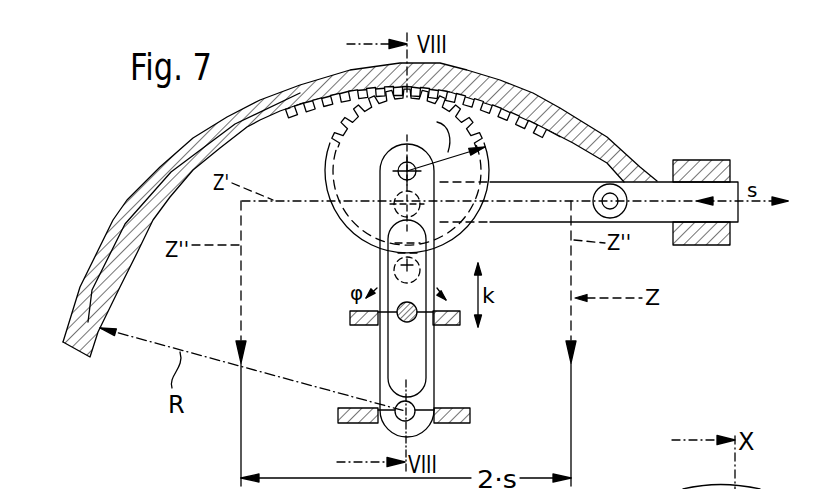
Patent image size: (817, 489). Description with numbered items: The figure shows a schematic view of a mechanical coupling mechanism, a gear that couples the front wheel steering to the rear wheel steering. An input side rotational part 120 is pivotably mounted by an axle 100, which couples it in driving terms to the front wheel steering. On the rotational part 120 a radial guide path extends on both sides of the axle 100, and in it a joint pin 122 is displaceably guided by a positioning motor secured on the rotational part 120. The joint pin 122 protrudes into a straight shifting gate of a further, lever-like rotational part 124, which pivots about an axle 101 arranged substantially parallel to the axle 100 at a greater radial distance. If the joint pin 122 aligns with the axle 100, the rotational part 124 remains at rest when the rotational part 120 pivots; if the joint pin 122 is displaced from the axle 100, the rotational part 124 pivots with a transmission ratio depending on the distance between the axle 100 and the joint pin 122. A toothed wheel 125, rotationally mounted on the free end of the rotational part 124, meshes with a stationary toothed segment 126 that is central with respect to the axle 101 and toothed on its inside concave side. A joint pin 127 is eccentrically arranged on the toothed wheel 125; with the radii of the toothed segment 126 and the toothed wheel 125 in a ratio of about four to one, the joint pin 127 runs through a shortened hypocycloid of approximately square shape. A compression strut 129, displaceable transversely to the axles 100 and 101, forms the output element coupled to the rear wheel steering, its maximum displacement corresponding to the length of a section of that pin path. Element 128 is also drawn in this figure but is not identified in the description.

The axle 100 is at (398, 320).
The axle 101 is at (382, 424).
The input side rotational part 120 is at (412, 363).
The joint pin 122 is at (420, 265).
The lever-like rotational part 124 is at (378, 260).
The toothed wheel 125 is at (484, 137).
The toothed segment 126 is at (523, 93).
The joint pin 127 is at (395, 198).
The slide bar 128 is at (572, 192).
The compression strut 129 is at (653, 222).